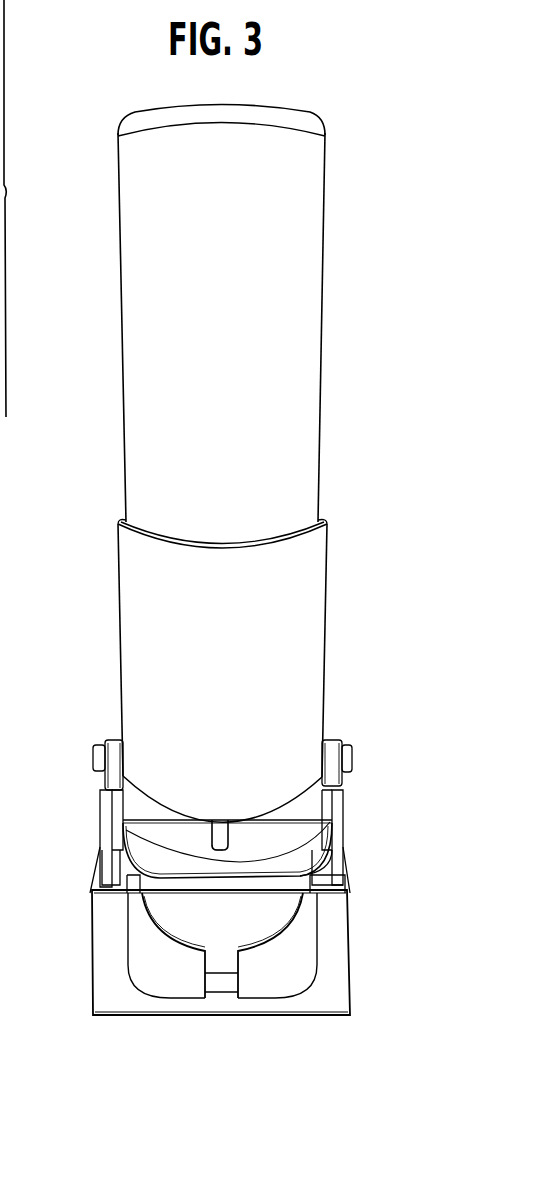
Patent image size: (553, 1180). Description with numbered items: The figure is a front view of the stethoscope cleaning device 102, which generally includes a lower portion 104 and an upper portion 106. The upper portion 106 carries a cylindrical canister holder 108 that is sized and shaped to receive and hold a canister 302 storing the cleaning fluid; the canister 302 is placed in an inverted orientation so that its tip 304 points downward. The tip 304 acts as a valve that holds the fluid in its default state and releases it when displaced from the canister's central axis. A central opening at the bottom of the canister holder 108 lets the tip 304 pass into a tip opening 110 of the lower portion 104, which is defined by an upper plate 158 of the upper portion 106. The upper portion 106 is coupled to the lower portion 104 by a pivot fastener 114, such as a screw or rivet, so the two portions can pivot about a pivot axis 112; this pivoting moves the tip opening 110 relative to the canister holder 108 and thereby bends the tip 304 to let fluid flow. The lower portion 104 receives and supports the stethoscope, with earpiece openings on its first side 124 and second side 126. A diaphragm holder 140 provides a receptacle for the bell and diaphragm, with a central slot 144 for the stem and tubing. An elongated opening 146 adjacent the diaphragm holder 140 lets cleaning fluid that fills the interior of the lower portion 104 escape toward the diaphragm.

The stethoscope cleaning device 102 is at (115, 1022).
The lower portion 104 is at (340, 967).
The upper portion 106 is at (305, 578).
The cylindrical canister holder 108 is at (238, 684).
The tip opening 110 is at (228, 850).
The pivot axis 112 is at (350, 765).
The pivot fastener 114 is at (345, 742).
The first side 124 is at (107, 932).
The second side 126 is at (340, 850).
The diaphragm holder 140 is at (187, 978).
The central slot 144 is at (232, 975).
The elongated opening 146 is at (167, 862).
The upper plate 158 is at (350, 877).
The canister 302 is at (258, 118).
The tip 304 is at (228, 828).